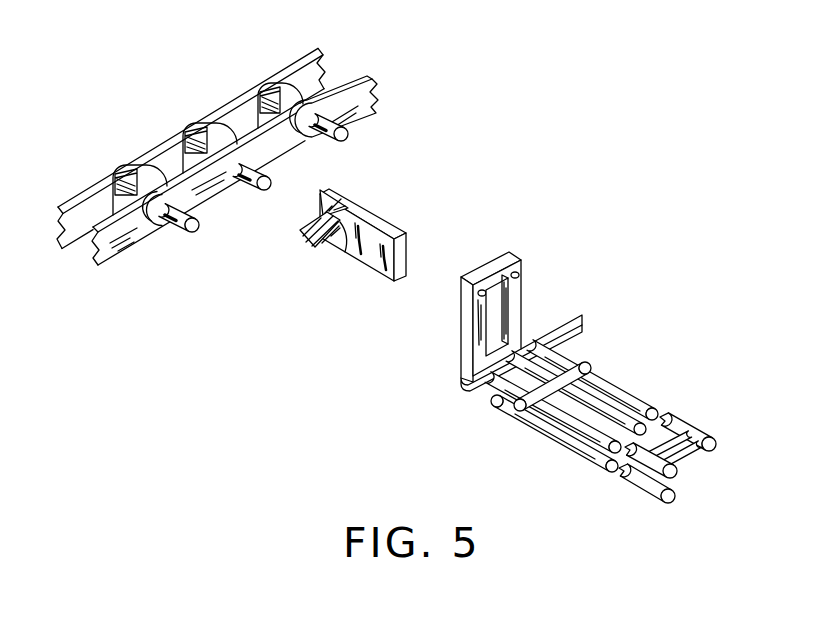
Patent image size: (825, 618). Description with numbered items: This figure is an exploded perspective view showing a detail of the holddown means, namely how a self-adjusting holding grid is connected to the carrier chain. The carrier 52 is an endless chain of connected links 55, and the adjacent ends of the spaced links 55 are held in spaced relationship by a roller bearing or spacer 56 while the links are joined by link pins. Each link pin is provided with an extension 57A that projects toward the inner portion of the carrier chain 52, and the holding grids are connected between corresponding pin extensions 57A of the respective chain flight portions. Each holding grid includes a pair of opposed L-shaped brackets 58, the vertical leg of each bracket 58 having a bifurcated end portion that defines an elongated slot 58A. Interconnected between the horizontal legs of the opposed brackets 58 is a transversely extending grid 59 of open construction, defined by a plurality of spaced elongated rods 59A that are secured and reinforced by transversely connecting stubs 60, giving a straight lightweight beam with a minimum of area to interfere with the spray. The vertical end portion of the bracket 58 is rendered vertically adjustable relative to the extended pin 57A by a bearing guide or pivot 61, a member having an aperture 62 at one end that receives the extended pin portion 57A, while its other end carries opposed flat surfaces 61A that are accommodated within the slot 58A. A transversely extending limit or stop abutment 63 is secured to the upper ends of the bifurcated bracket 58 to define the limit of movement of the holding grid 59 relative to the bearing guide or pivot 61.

The carrier 52 is at (247, 165).
The link 55 is at (108, 176).
The roller bearing or spacer 56 is at (137, 166).
The pin extension 57A is at (349, 134).
The bearing guide or pivot 61 is at (388, 249).
The flat surface 61A is at (404, 240).
The aperture 62 is at (302, 219).
The limit or stop abutment 63 is at (522, 297).
The L-shaped bracket 58 is at (528, 345).
The elongated slot 58A is at (503, 290).
The grid 59 is at (692, 418).
The rod 59A is at (622, 396).
The connecting stub 60 is at (587, 376).